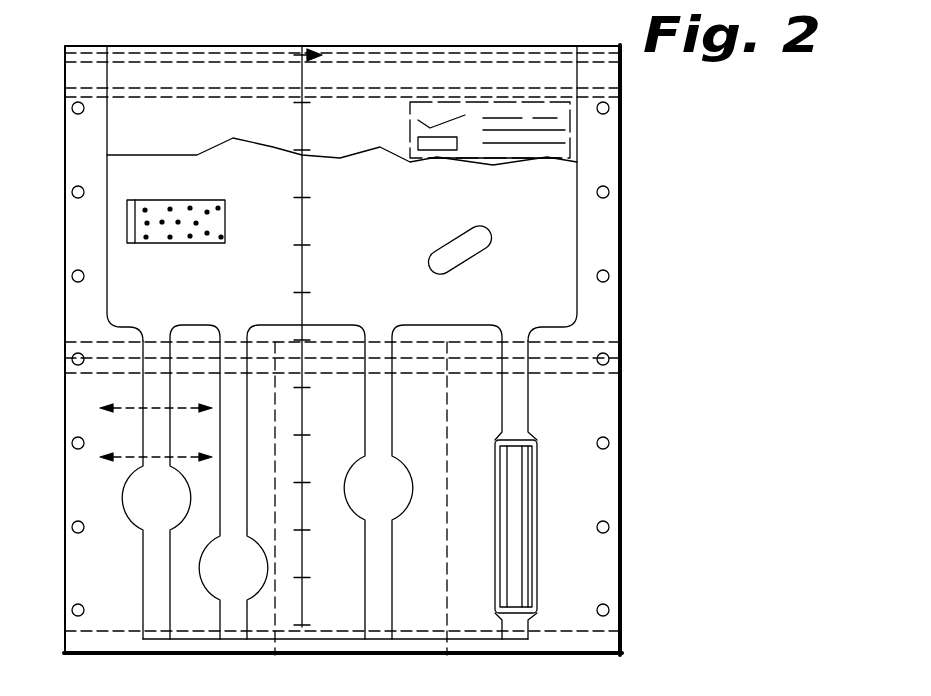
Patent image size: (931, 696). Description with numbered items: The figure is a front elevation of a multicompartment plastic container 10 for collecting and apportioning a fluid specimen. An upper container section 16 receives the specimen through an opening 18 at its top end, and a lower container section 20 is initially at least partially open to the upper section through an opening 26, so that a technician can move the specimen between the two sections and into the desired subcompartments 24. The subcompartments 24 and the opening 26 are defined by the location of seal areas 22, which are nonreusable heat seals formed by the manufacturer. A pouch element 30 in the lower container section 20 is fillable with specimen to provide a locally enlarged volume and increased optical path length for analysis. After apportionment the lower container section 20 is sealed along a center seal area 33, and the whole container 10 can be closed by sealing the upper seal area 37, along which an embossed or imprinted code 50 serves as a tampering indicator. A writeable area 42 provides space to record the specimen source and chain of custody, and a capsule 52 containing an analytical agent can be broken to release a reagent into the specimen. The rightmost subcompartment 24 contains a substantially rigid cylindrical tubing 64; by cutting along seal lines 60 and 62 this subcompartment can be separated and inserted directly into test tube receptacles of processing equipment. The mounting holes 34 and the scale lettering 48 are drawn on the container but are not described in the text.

The plastic container 10 is at (641, 293).
The upper container section 16 is at (58, 48).
The opening 18 is at (370, 45).
The lower container section 20 is at (58, 358).
The seal areas 22 is at (598, 236).
The subcompartments 24 is at (63, 664).
The opening 26 is at (512, 328).
The pouch element 30 is at (138, 515).
The center seal area 33 is at (632, 338).
The mounting holes 34 is at (83, 112).
The upper seal area 37 is at (621, 72).
The writeable area 42 is at (409, 128).
The scale lettering indicia 48 is at (318, 227).
The embossed or imprinted code 50 is at (162, 65).
The capsule 52 is at (488, 229).
The seal line 60 is at (447, 428).
The seal line 62 is at (563, 373).
The cylindrical tubing 64 is at (518, 570).